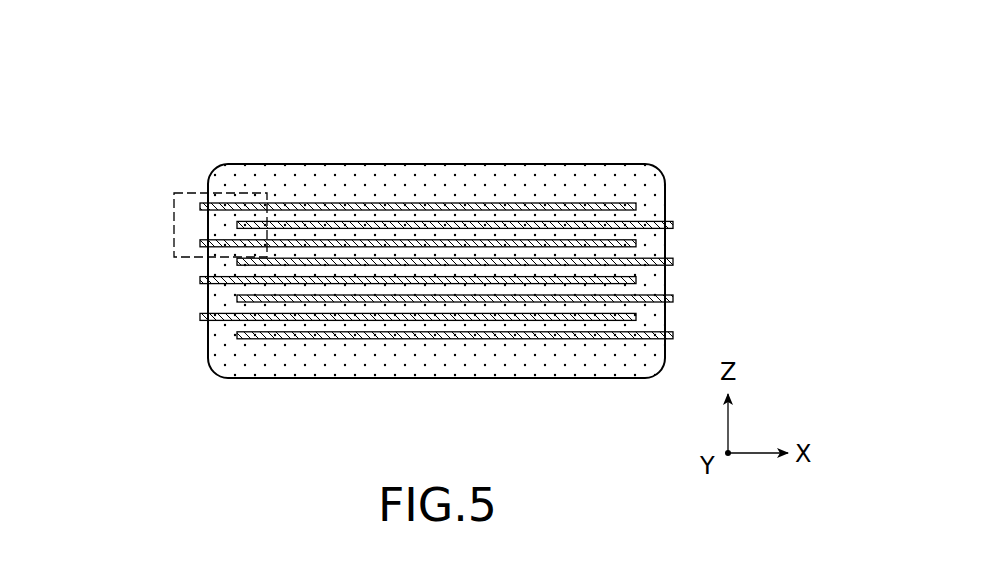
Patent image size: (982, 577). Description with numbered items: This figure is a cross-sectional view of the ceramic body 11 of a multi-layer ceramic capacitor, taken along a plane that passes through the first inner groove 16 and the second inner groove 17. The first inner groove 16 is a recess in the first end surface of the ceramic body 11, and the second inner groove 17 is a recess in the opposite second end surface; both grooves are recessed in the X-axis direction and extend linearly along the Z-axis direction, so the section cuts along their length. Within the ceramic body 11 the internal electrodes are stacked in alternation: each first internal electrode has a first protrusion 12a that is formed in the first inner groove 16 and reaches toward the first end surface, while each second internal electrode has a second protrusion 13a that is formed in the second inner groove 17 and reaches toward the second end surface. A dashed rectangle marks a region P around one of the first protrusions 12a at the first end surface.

The ceramic body 11 is at (433, 194).
The first protrusion 12a is at (200, 316).
The second protrusion 13a is at (673, 335).
The first inner groove 16 is at (198, 343).
The second inner groove 17 is at (678, 203).
The region P is at (185, 190).